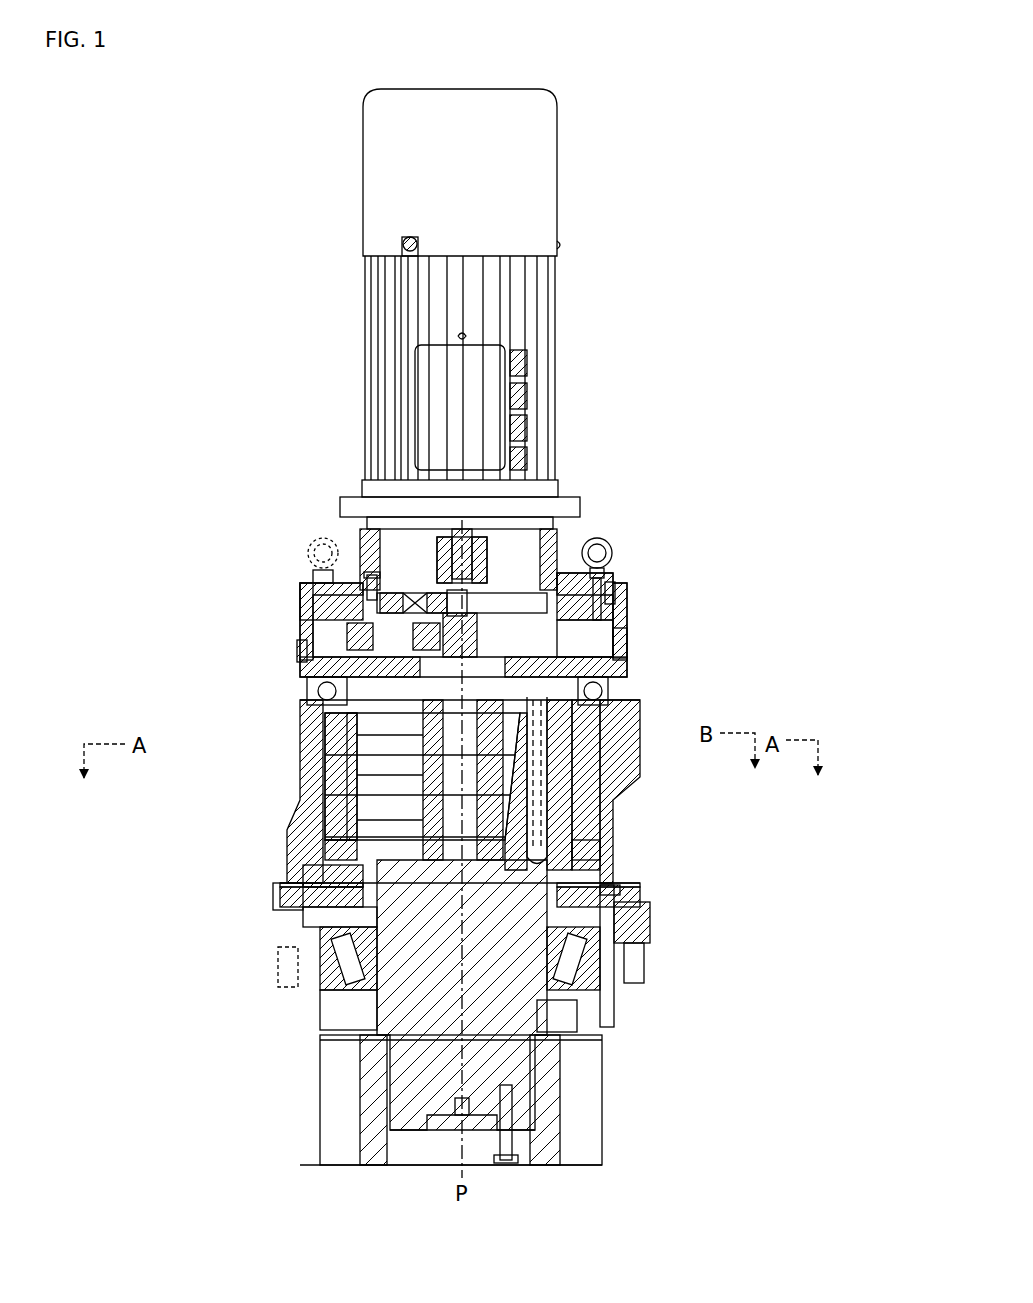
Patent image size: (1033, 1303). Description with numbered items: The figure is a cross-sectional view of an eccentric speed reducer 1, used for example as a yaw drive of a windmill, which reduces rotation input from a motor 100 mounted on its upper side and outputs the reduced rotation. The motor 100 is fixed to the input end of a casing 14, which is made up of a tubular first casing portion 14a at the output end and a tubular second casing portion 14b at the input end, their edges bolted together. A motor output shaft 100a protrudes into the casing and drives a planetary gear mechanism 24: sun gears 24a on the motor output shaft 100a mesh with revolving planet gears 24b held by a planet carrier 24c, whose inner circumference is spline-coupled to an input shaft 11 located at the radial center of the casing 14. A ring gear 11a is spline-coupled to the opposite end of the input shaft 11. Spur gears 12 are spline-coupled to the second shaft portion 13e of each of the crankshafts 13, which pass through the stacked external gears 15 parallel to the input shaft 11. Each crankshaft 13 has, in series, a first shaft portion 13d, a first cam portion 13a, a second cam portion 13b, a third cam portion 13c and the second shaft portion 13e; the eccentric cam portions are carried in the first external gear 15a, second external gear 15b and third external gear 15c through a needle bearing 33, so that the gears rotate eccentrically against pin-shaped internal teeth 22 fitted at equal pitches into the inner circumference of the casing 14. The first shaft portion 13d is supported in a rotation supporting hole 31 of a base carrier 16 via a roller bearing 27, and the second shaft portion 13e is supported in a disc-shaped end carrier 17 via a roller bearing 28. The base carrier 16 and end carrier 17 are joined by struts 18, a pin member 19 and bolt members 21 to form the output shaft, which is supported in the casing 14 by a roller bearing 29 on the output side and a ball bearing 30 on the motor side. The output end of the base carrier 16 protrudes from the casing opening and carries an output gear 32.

The eccentric speed reducer 1 is at (684, 424).
The motor 100 is at (388, 368).
The motor output shaft 100a is at (480, 560).
The planetary gear mechanism 24 is at (428, 590).
The sun gears 24a is at (482, 598).
The planet gears 24b is at (440, 615).
The planet carrier 24c is at (436, 600).
The input shaft 11 is at (610, 553).
The ring gear 11a is at (548, 540).
The casing 14 is at (565, 555).
The second casing portion 14b is at (560, 575).
The first casing portion 14a is at (610, 860).
The spur gears 12 is at (390, 625).
The second shaft portion 13e is at (372, 592).
The crankshafts 13 is at (368, 662).
The first cam portion 13a is at (330, 825).
The second cam portion 13b is at (330, 772).
The third cam portion 13c is at (330, 726).
The first shaft portion 13d is at (302, 906).
The end carrier 17 is at (300, 650).
The bolt members 21 is at (600, 650).
The pin member 19 is at (632, 647).
The roller bearing 28 is at (300, 679).
The ball bearing 30 is at (633, 686).
The needle bearing 33 is at (292, 706).
The external gears 15 is at (292, 740).
The first external gear 15a is at (580, 822).
The second external gear 15b is at (600, 783).
The third external gear 15c is at (605, 718).
The struts 18 is at (577, 762).
The internal teeth 22 is at (315, 840).
The roller bearing 27 is at (320, 865).
The base carrier 16 is at (348, 970).
The roller bearing 29 is at (600, 978).
The rotation supporting holes 31 is at (575, 1015).
The output gear 32 is at (596, 1128).